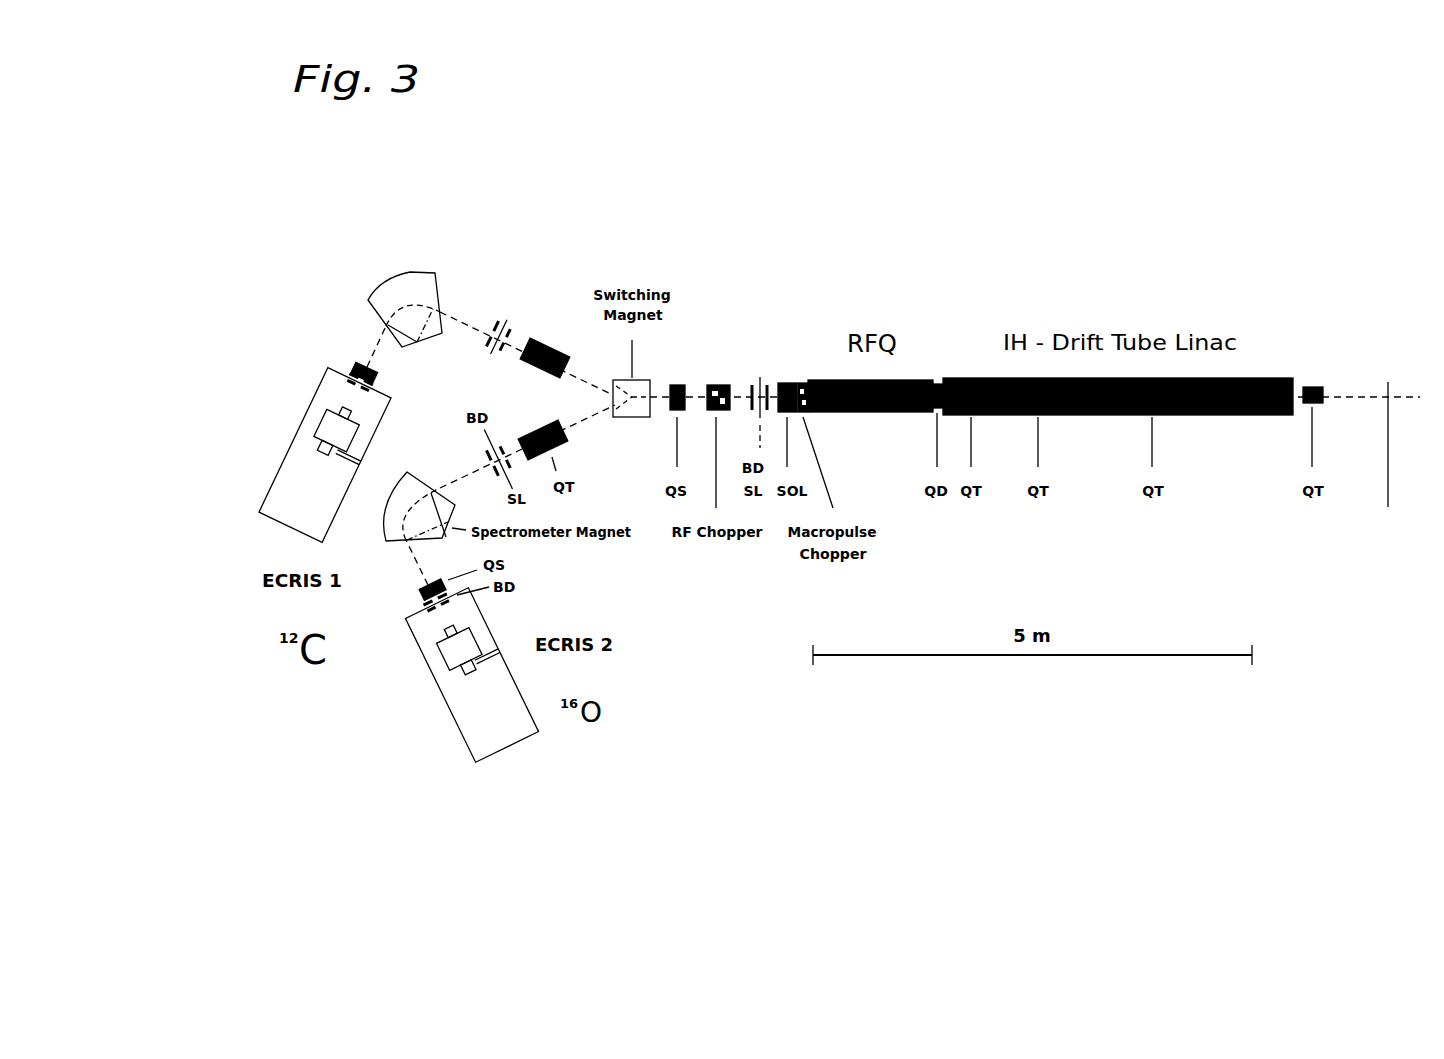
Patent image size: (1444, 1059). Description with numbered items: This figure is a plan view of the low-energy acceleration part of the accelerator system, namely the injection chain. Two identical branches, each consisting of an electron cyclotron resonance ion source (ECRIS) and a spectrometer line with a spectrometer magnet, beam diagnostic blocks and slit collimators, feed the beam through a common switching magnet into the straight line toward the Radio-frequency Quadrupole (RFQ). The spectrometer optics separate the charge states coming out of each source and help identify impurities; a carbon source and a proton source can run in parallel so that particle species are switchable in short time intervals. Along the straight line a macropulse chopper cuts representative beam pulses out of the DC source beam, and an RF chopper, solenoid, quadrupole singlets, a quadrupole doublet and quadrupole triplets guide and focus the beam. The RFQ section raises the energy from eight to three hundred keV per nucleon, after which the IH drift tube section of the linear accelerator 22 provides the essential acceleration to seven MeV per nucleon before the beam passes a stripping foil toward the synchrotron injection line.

The linear accelerator 22 is at (990, 378).